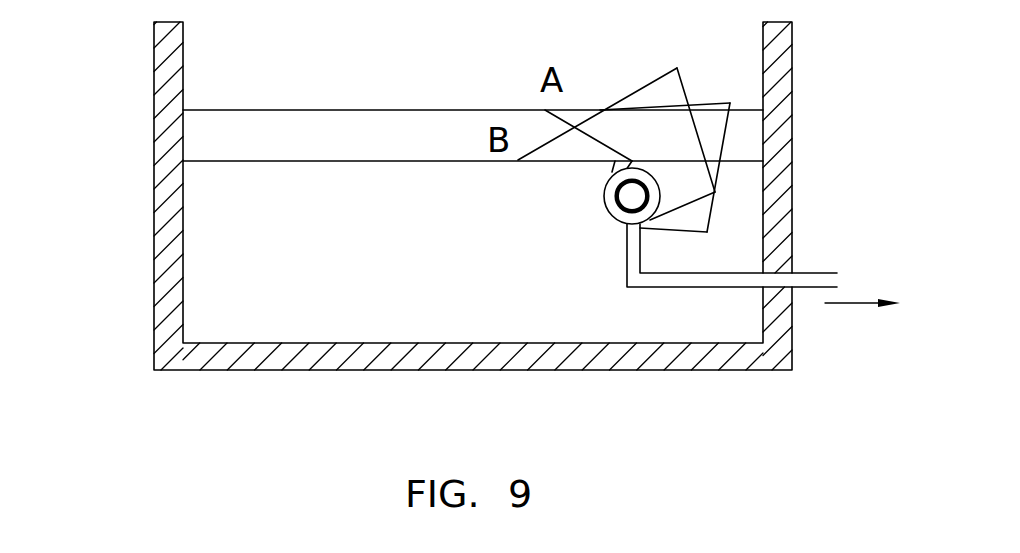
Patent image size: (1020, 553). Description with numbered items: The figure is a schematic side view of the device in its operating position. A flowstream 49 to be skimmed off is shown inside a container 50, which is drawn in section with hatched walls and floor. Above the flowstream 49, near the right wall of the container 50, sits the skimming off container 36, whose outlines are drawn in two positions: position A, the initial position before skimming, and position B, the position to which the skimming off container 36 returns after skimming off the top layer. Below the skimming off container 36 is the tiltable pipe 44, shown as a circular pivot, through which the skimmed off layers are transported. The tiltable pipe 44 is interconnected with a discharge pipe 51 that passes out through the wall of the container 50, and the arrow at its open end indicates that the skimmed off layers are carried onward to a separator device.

The skimming off container 36 is at (727, 143).
The tiltable pipe 44 is at (631, 200).
The flowstream 49 is at (313, 138).
The container 50 is at (118, 257).
The discharge pipe 51 is at (847, 262).